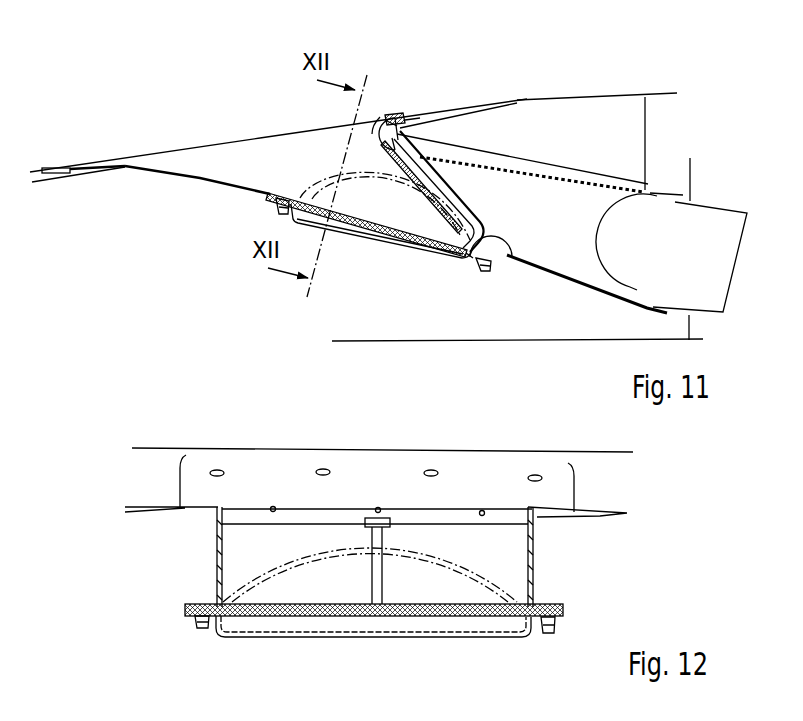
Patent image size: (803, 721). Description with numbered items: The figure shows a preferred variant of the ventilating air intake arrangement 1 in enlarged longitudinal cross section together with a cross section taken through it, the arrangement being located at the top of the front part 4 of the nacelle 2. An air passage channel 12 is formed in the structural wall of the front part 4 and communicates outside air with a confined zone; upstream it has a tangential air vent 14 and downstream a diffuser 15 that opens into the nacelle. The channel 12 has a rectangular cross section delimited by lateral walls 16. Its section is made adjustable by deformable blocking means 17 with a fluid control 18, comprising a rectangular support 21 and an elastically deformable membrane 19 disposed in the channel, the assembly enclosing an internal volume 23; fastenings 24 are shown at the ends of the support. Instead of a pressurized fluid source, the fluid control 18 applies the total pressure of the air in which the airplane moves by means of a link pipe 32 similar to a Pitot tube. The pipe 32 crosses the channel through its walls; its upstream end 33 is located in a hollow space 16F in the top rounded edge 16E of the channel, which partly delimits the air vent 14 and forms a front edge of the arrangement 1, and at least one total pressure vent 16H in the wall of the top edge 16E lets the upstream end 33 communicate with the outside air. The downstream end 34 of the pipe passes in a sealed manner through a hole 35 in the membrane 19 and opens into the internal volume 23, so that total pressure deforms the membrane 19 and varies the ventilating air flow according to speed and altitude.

In FIG. 11, the ventilating air intake arrangement 1 is at (202, 113).
In FIG. 11, the nacelle 2 is at (604, 87).
In FIG. 11, the front part 4 is at (52, 166).
In FIG. 11, the air passage channel 12 is at (566, 227).
In FIG. 12, the air passage channel 12 is at (509, 565).
In FIG. 11, the air vent 14 is at (185, 148).
In FIG. 11, the diffuser 15 is at (713, 297).
In FIG. 12, the lateral walls 16 is at (213, 550).
In FIG. 11, the top rounded edge 16E is at (374, 118).
In FIG. 11, the hollow space 16F is at (386, 120).
In FIG. 11, the total pressure vent 16H is at (368, 132).
In FIG. 12, the total pressure vent 16H is at (377, 508).
In FIG. 11, the blocking means 17 is at (399, 256).
In FIG. 12, the blocking means 17 is at (538, 645).
In FIG. 11, the fluid control 18 is at (460, 180).
In FIG. 11, the membrane 19 is at (312, 199).
In FIG. 12, the membrane 19 is at (481, 618).
In FIG. 12, the support 21 is at (363, 638).
In FIG. 11, the internal volume 23 is at (368, 230).
In FIG. 12, the internal volume 23 is at (299, 624).
In FIG. 11, the fastener 24 is at (273, 206).
In FIG. 12, the fastener 24 is at (193, 622).
In FIG. 11, the link pipe 32 is at (438, 170).
In FIG. 12, the link pipe 32 is at (383, 578).
In FIG. 11, the upstream end 33 is at (410, 118).
In FIG. 12, the upstream end 33 is at (378, 508).
In FIG. 11, the downstream end 34 is at (509, 256).
In FIG. 11, the hole 35 is at (457, 259).